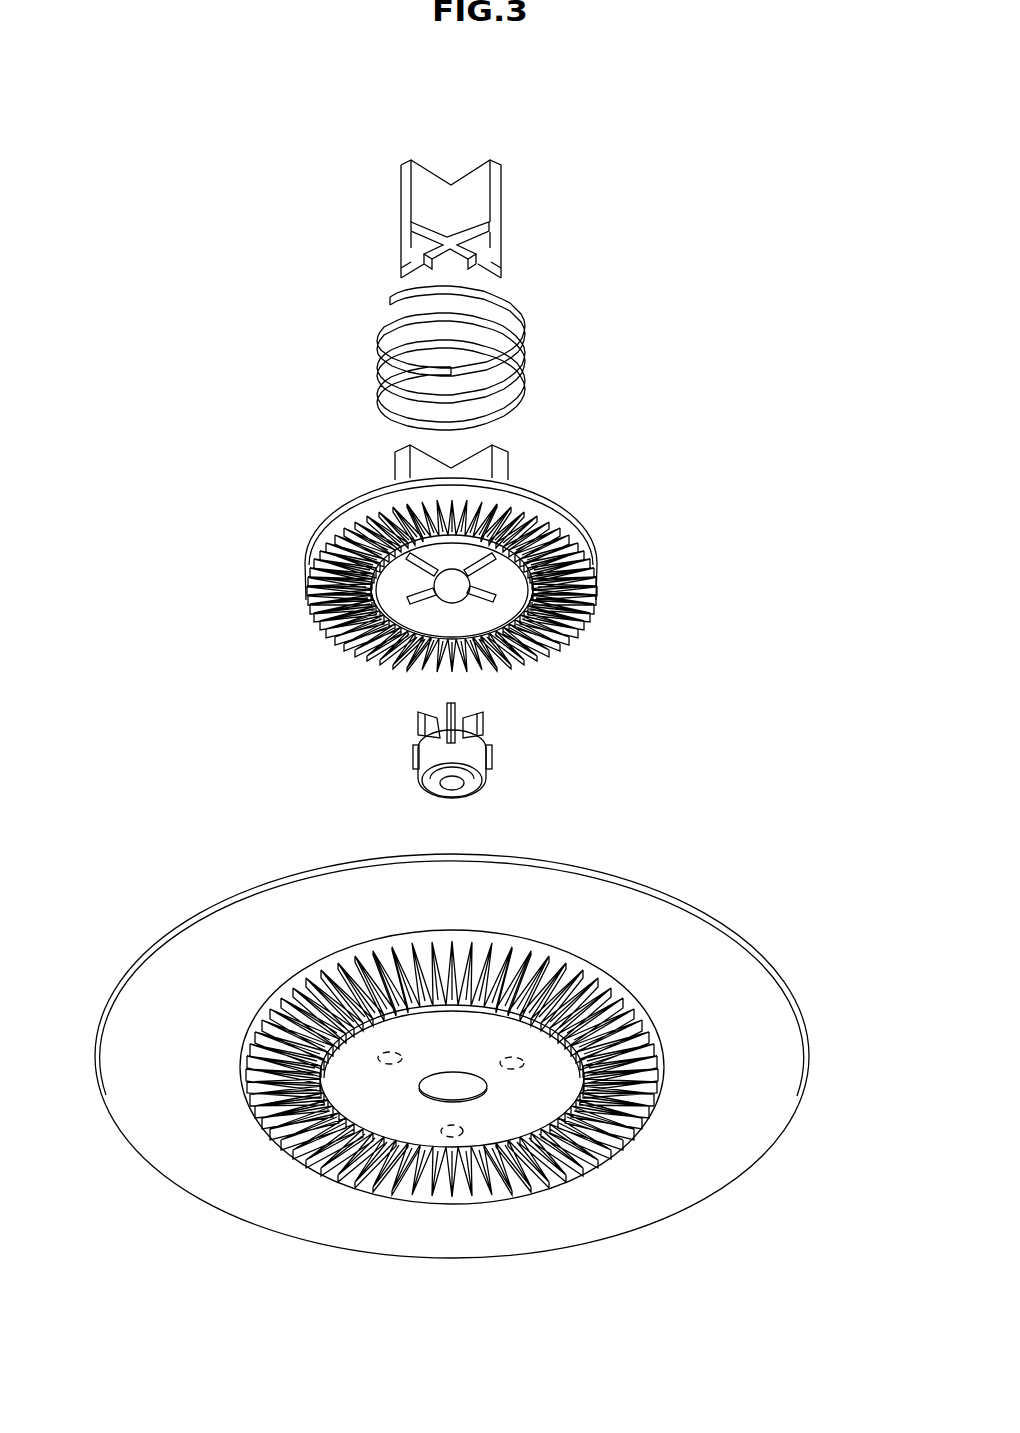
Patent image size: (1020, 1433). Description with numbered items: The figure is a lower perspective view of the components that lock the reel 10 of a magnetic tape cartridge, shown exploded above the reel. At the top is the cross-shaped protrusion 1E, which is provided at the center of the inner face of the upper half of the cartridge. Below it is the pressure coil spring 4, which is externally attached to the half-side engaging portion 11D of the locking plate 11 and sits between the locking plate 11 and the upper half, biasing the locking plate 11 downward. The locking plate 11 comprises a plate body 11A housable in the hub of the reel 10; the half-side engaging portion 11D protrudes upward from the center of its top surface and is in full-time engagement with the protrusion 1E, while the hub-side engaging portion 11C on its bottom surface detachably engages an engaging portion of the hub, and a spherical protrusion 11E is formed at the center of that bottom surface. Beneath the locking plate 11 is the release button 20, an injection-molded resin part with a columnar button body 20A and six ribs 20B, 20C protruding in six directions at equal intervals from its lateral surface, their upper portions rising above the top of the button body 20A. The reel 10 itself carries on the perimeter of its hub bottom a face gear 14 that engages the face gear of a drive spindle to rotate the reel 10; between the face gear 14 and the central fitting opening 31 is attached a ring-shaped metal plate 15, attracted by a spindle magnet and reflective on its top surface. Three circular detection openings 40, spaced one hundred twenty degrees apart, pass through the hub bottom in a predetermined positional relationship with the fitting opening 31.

The protrusion 1E is at (482, 197).
The pressure coil spring 4 is at (520, 348).
The locking plate 11 is at (554, 551).
The plate body 11A is at (592, 538).
The hub-side engaging portion 11C is at (565, 640).
The half-side engaging portion 11D is at (503, 462).
The spherical protrusion 11E is at (445, 590).
The release button 20 is at (477, 760).
The button body 20A is at (460, 788).
The ribs 20B is at (475, 722).
The ribs 20C is at (447, 706).
The reel 10 is at (467, 1067).
The face gear 14 is at (557, 990).
The metal plate 15 is at (370, 1175).
The fitting opening 31 is at (462, 1093).
The detection openings 40 is at (378, 1058).